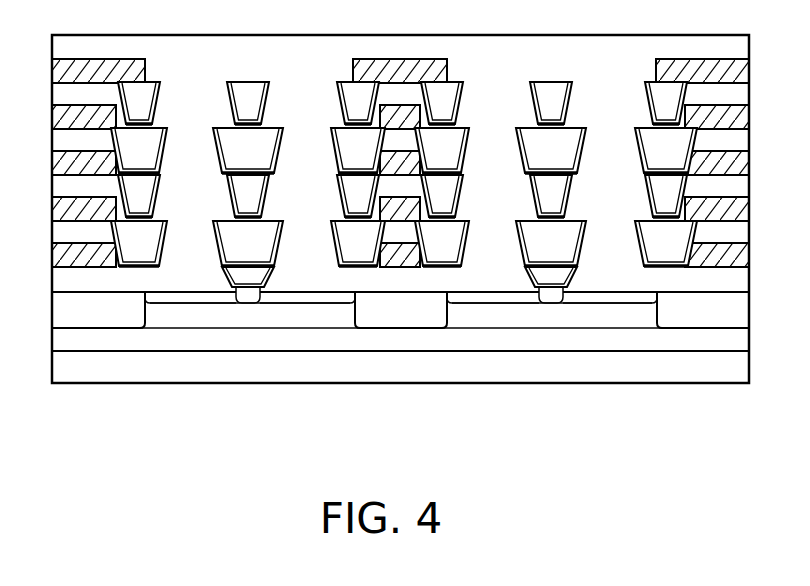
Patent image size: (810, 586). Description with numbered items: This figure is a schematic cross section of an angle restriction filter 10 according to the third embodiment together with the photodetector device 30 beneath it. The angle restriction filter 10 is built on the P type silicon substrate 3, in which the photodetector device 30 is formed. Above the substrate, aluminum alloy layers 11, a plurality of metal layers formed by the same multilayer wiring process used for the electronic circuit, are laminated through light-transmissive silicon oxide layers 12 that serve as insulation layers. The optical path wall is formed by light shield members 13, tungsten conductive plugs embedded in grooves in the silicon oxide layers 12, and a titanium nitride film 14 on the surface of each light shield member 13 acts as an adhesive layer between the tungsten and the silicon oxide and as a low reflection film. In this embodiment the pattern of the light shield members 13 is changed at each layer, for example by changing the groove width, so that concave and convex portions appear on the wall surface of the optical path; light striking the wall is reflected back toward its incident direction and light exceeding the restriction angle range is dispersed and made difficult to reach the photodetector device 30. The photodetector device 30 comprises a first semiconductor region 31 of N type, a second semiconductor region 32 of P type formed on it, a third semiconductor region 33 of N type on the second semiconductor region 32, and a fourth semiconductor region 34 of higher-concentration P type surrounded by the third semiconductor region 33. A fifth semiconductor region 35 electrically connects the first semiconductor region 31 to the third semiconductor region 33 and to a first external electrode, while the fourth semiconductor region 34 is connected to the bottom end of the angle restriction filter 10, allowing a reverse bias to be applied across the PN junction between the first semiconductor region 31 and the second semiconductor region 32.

The P type silicon substrate 3 is at (742, 365).
The angle restriction filter 10 is at (400, 177).
The aluminum alloy layers 11 is at (742, 67).
The silicon oxide layers 12 is at (742, 90).
The light shield members 13 is at (150, 96).
The titanium nitride film 14 is at (160, 152).
The photodetector device 30 is at (638, 437).
The first semiconductor region 31 is at (742, 339).
The second semiconductor region 32 is at (170, 318).
The third semiconductor region 33 is at (212, 312).
The fourth semiconductor region 34 is at (250, 305).
The fifth semiconductor region 35 is at (100, 318).